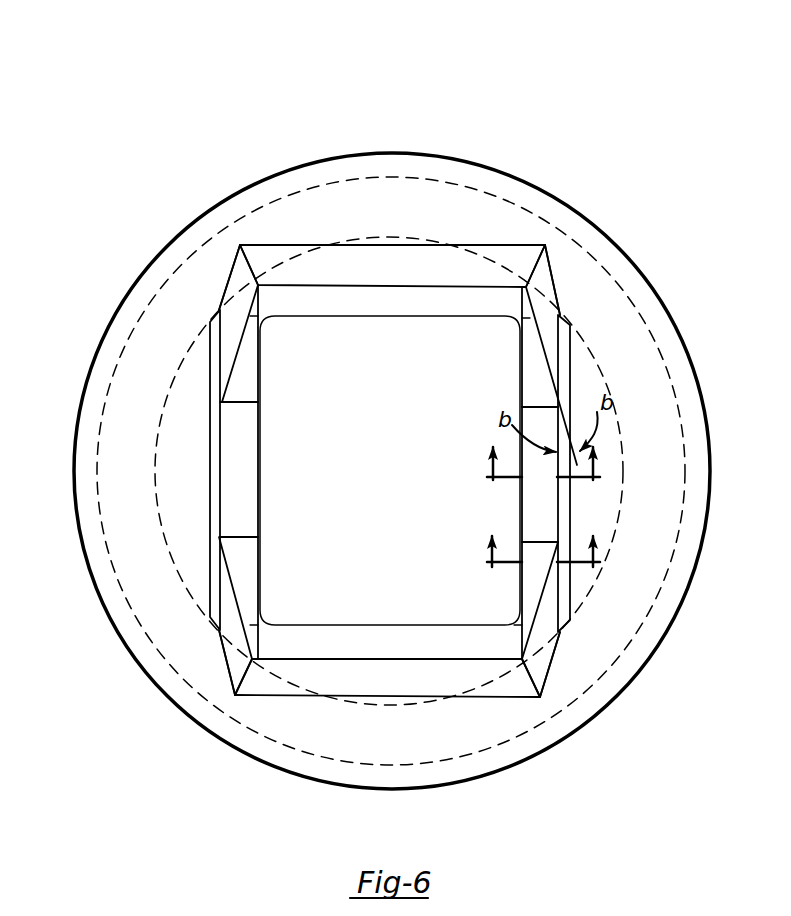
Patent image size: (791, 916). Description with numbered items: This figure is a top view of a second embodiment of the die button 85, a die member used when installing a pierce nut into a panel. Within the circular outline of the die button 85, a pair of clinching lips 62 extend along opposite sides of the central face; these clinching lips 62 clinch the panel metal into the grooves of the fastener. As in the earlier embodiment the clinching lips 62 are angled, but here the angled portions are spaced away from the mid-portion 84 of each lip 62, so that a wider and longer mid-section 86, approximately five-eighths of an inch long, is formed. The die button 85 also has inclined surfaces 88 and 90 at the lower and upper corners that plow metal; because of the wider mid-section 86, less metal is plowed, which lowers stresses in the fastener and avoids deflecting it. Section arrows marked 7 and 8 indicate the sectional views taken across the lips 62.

The die button 85 is at (586, 162).
The mid-portion 84 is at (261, 452).
The clinching lips 62 is at (210, 455).
The mid-section 86 is at (535, 510).
The inclined surface 90 is at (235, 300).
The inclined surface 88 is at (233, 648).
The section line 7- 7 is at (545, 468).
The section line 8- 8 is at (537, 556).